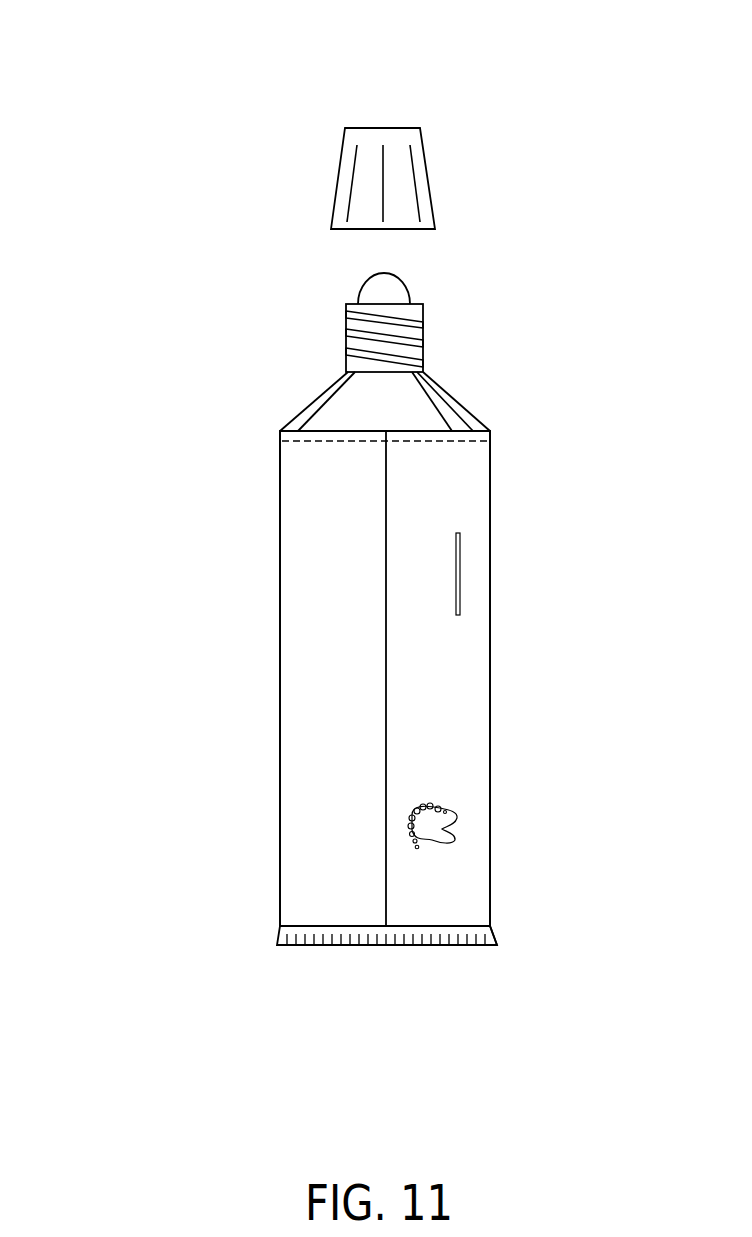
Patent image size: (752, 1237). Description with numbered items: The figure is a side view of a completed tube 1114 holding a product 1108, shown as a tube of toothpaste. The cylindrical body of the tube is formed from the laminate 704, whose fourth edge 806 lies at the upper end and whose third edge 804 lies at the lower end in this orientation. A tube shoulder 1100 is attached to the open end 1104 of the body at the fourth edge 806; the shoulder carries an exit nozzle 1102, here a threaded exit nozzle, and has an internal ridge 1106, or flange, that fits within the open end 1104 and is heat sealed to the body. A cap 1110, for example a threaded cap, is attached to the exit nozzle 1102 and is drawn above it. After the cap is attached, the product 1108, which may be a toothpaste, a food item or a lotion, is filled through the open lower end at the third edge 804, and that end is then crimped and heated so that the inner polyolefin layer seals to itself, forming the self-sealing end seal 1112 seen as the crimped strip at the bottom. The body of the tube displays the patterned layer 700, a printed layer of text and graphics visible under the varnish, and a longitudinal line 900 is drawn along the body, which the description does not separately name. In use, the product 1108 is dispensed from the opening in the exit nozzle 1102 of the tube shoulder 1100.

The cap 1110 is at (398, 135).
The product 1108 is at (378, 288).
The exit nozzle 1102 is at (346, 352).
The tube shoulder 1100 is at (340, 413).
The open end 1104 is at (507, 402).
The internal ridge 1106 is at (302, 445).
The fourth edge 806 is at (494, 427).
The laminate 704 is at (499, 437).
The completed tube 1114 is at (127, 383).
The seam 900 is at (382, 642).
The patterned layer 700 is at (420, 827).
The end seal 1112 is at (303, 942).
The third edge 804 is at (488, 950).